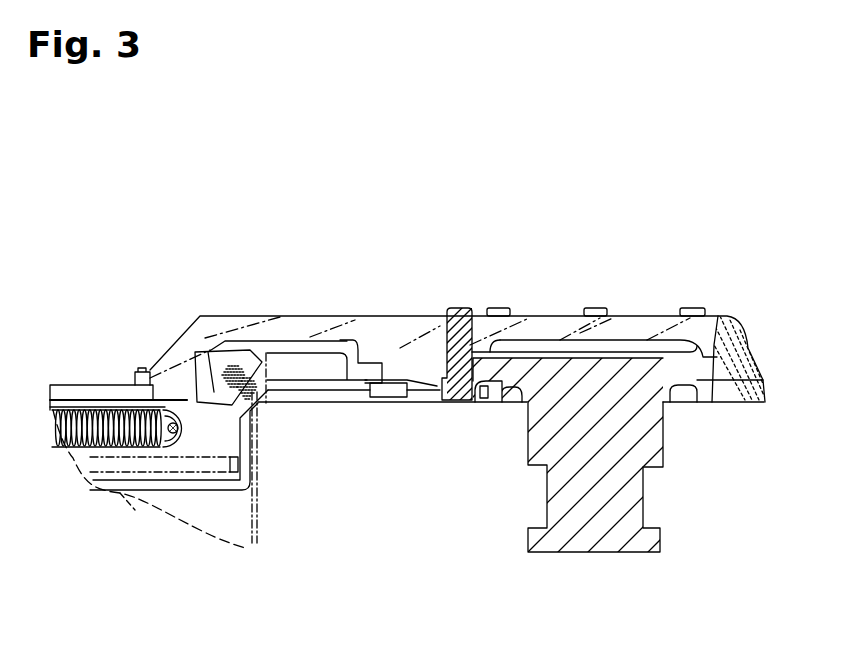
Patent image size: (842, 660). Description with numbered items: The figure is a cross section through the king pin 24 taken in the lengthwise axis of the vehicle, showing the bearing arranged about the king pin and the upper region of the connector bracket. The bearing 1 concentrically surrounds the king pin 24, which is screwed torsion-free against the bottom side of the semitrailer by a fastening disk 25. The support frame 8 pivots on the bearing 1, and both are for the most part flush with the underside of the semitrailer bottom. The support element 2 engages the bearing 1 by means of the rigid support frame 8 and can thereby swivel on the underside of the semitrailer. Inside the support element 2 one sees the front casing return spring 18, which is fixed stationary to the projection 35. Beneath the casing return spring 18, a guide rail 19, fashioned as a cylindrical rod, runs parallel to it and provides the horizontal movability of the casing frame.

The bearing 1 is at (387, 353).
The support element 2 is at (92, 343).
The support frame 8 is at (213, 405).
The casing return spring 18 is at (112, 408).
The guide rail 19 is at (205, 465).
The king pin 24 is at (610, 471).
The fastening disk 25 is at (427, 362).
The projection 35 is at (183, 425).